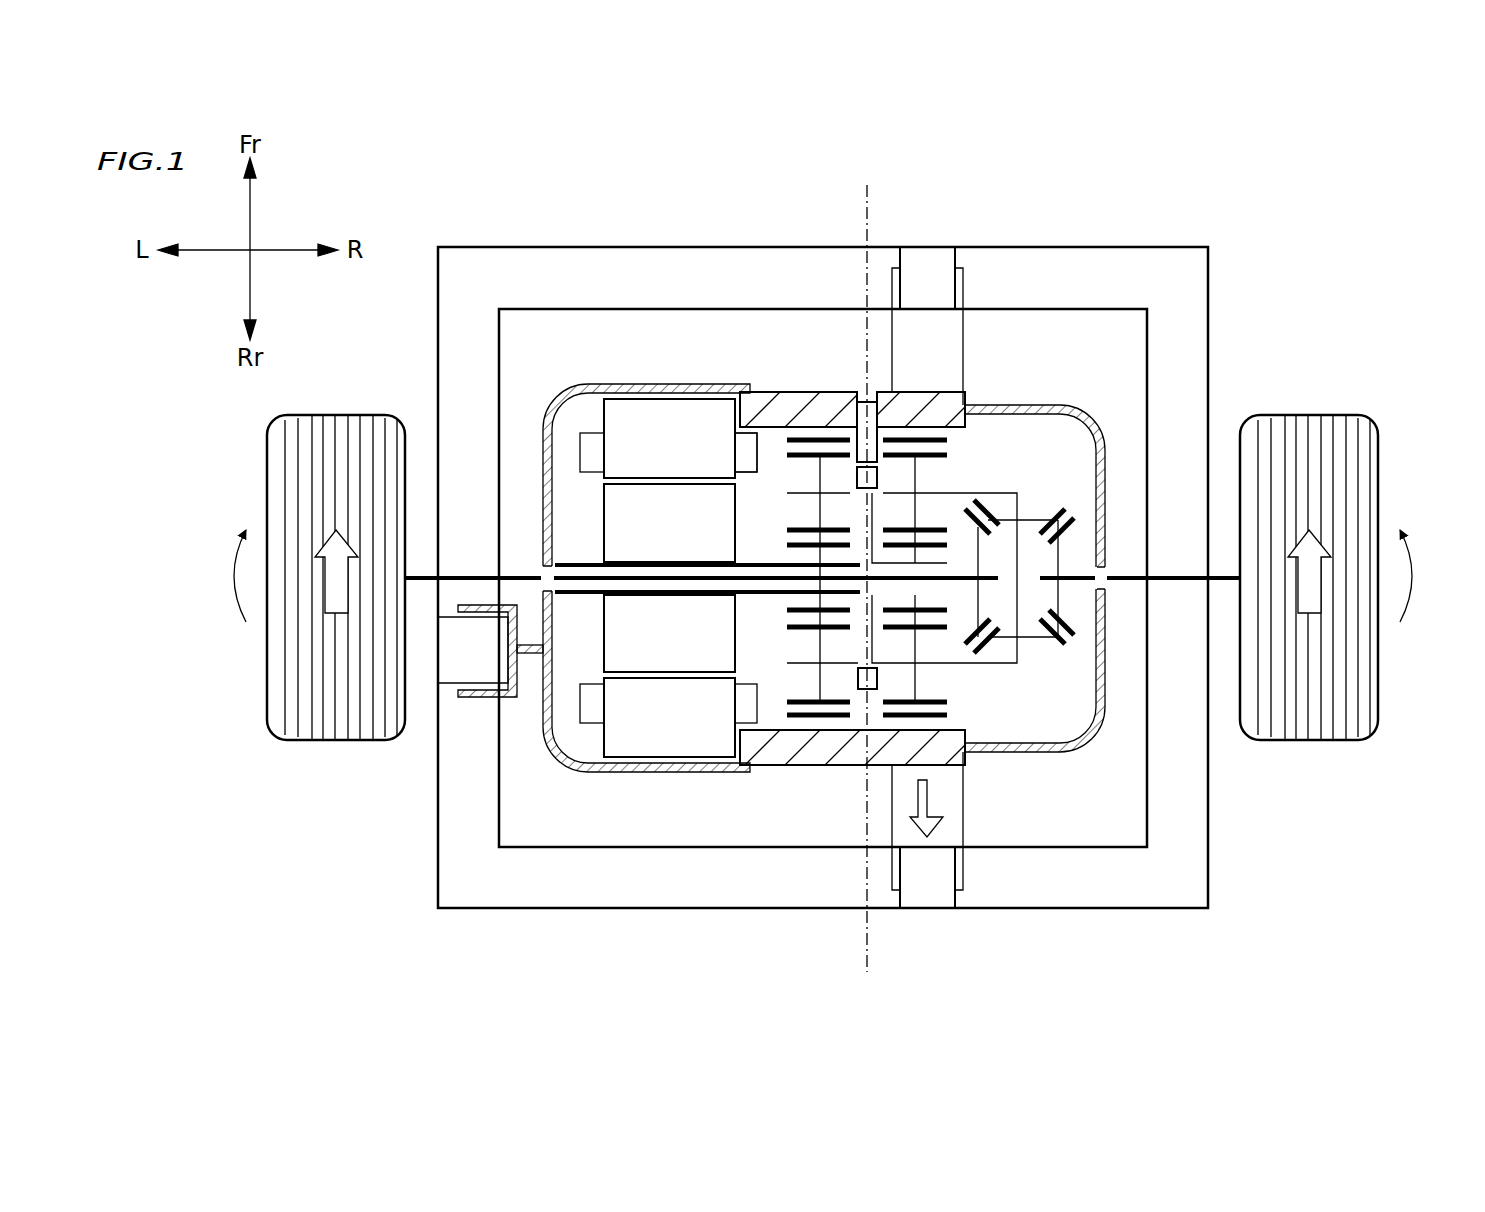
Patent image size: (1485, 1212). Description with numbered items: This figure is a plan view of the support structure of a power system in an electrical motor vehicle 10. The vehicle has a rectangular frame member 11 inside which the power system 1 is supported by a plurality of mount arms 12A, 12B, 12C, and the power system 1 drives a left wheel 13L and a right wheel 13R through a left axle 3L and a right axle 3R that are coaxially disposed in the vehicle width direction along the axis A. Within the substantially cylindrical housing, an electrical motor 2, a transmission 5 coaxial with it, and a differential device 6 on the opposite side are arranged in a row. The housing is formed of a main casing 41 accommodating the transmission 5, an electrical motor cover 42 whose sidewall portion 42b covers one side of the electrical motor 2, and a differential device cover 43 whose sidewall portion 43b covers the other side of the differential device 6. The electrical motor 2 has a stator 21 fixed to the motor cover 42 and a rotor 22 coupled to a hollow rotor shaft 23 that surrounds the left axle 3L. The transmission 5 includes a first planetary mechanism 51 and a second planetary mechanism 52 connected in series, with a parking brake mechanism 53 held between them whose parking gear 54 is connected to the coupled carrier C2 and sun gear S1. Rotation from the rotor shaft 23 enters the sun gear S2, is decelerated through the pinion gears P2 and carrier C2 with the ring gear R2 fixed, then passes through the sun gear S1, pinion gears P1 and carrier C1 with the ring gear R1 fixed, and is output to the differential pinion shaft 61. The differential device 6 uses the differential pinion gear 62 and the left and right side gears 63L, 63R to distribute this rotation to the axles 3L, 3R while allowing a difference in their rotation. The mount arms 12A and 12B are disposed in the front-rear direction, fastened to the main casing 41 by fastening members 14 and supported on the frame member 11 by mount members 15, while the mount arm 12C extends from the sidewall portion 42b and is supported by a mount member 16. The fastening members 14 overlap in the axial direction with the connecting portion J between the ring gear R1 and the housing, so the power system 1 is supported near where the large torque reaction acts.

The power system 1 is at (1089, 593).
The electrical motor 2 is at (608, 474).
The left axle 3L is at (467, 573).
The right axle 3R is at (1180, 577).
The transmission 5 is at (880, 580).
The differential device 6 is at (1078, 552).
The electrical motor vehicle 10 is at (1268, 212).
The frame member 11 is at (1209, 860).
The mount arm 12A is at (966, 330).
The mount arm 12B is at (965, 812).
The mount arm 12C is at (480, 690).
The left wheel 13L is at (267, 487).
The right wheel 13R is at (1378, 487).
The fastening member 14 is at (966, 400).
The mount member 15 is at (922, 278).
The mount member 16 is at (465, 653).
The stator 21 is at (632, 523).
The rotor 22 is at (650, 430).
The rotor shaft 23 is at (543, 520).
The main casing 41 is at (813, 763).
The electrical motor cover 42 is at (645, 777).
The sidewall portion 42b is at (545, 700).
The differential device cover 43 is at (1100, 745).
The sidewall portion 43b is at (1107, 690).
The first planetary mechanism 51 is at (885, 765).
The second planetary mechanism 52 is at (843, 765).
The parking brake mechanism 53 is at (862, 405).
The parking gear 54 is at (830, 715).
The differential pinion shaft 61 is at (1020, 660).
The differential pinion gear 62 is at (1060, 500).
The left side gear 63L is at (966, 506).
The right side gear 63R is at (1075, 512).
The rotation axis A is at (867, 578).
The connecting portion J is at (1000, 515).
The pinion gear P1 is at (1062, 397).
The pinion gear P2 is at (757, 470).
The ring gear R1 is at (930, 425).
The ring gear R2 is at (800, 440).
The sun gear S1 is at (990, 700).
The sun gear S2 is at (800, 620).
The carrier C1 is at (1030, 700).
The carrier C2 is at (818, 690).